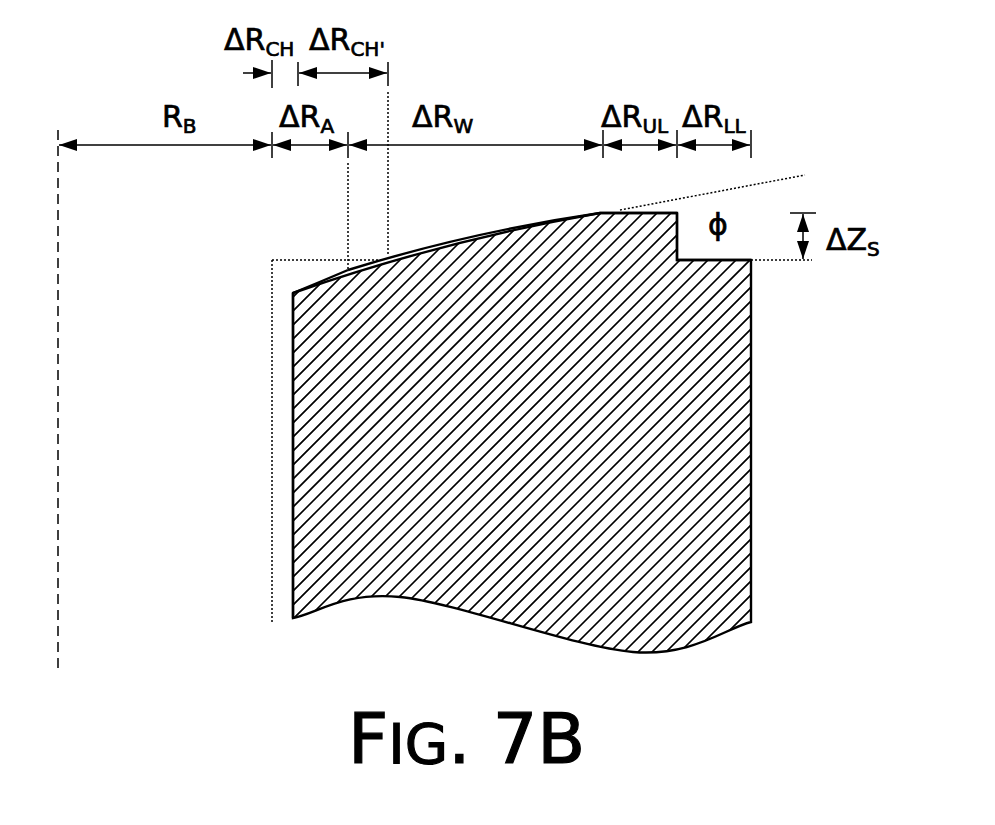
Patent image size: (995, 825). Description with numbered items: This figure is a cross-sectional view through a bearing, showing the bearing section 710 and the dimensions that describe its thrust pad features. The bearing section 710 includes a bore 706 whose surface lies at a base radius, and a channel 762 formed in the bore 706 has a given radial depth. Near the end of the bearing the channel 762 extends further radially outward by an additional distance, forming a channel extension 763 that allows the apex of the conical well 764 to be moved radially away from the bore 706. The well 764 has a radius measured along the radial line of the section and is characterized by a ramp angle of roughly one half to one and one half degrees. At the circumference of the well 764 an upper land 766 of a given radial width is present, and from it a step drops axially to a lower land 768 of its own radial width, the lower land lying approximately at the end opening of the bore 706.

The bearing section 710 is at (751, 443).
The channel 762 is at (293, 413).
The channel extension 763 is at (323, 280).
The well 764 is at (452, 243).
The upper land 766 is at (630, 210).
The stepped lower ledge surface 768 is at (723, 262).
The bore 706 is at (270, 482).